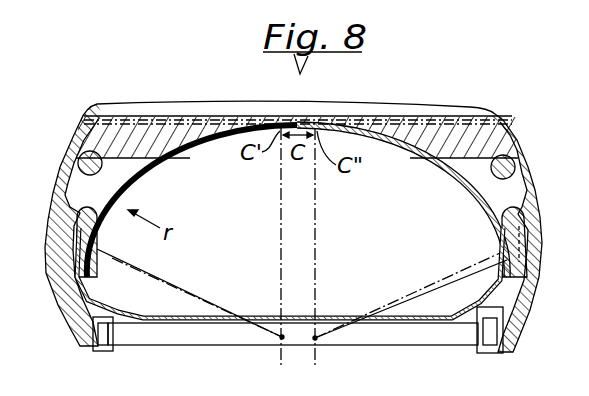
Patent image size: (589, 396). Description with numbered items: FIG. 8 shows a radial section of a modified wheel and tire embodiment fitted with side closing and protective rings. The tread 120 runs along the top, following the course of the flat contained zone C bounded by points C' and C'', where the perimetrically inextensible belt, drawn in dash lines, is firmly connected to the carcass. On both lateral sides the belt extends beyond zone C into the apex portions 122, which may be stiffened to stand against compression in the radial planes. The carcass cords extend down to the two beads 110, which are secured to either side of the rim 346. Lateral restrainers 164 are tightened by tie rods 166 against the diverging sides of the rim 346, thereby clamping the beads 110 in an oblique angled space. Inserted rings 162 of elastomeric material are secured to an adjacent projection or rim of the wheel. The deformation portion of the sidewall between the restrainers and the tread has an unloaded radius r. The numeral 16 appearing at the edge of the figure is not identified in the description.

The tread 120 is at (161, 107).
The apex portions 122 is at (471, 109).
The inserted rings 162 is at (533, 207).
The housing wall 16 is at (539, 233).
The lateral restrainers 164 is at (537, 288).
The beads 110 is at (64, 312).
The tie rods 166 is at (193, 337).
The rim 346 is at (330, 318).